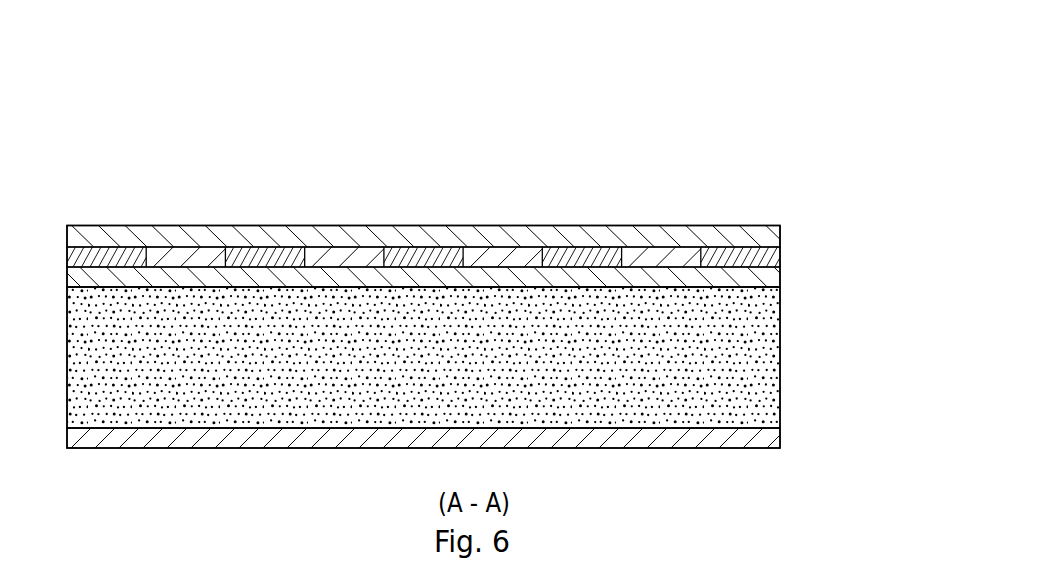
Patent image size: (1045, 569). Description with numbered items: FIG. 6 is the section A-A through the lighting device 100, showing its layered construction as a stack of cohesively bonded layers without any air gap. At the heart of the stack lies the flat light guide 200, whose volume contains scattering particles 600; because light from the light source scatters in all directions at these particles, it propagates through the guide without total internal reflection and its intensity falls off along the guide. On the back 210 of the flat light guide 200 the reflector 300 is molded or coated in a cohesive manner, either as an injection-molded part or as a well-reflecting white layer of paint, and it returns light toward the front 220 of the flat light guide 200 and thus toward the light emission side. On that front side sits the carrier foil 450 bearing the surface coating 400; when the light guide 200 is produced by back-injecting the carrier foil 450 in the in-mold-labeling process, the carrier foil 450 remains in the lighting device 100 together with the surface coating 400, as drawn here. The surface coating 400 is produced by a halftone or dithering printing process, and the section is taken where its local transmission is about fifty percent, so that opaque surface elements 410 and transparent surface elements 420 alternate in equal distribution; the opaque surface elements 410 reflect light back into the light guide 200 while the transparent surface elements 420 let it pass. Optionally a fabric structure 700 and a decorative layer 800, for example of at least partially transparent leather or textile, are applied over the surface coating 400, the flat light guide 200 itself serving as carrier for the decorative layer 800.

The lighting device 100 is at (786, 155).
The flat light guide 200 is at (795, 334).
The back of the flat light guide 210 is at (657, 430).
The front of the flat light guide 220 is at (654, 290).
The reflector 300 is at (766, 438).
The surface coating 400 is at (792, 252).
The opaque surface elements 410 is at (67, 212).
The transparent surface elements 420 is at (148, 212).
The carrier foil 450 is at (775, 278).
The scattering particles 600 is at (747, 353).
The fabric structure 700 is at (780, 229).
The decorative layer 800 is at (426, 237).